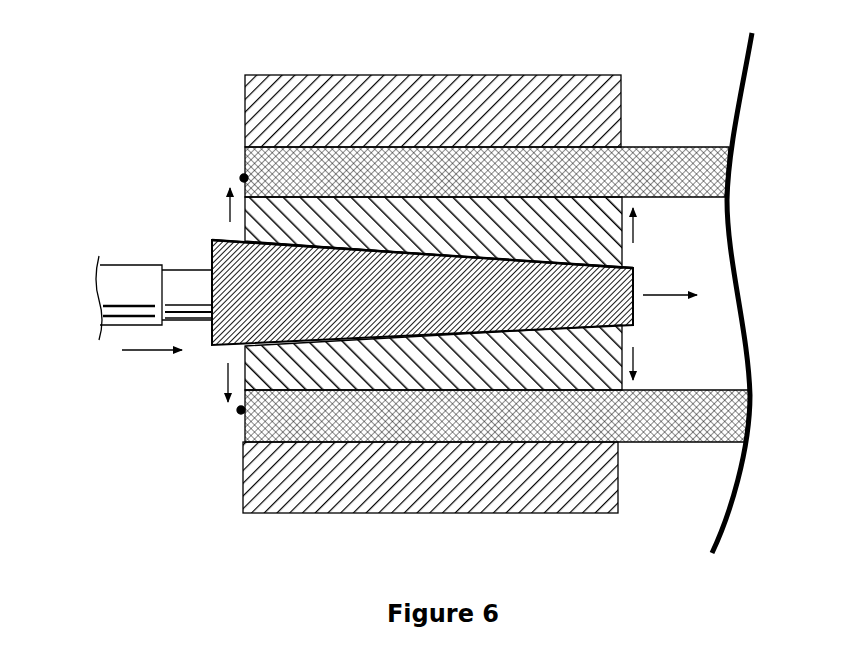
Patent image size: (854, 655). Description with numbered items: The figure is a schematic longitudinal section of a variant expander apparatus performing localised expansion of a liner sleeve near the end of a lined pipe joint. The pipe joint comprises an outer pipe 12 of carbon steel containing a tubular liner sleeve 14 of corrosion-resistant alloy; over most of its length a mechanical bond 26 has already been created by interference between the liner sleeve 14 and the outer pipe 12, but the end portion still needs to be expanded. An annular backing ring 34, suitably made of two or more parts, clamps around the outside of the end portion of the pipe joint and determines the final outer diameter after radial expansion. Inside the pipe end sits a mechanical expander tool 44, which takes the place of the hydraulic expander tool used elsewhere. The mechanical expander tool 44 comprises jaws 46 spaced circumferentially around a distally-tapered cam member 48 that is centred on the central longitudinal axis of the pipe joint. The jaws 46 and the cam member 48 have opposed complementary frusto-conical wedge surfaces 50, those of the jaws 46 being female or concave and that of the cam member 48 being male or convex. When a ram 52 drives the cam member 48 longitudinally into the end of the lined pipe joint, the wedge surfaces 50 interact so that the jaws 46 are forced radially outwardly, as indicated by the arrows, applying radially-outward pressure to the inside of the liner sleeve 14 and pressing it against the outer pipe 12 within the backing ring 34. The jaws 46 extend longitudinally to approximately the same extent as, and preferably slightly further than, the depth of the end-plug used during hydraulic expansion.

The outer pipe 12 is at (680, 165).
The liner sleeve 14 is at (725, 200).
The mechanical bond 26 is at (632, 175).
The backing ring 34 is at (396, 108).
The mechanical expander tool 44 is at (204, 191).
The jaws 46 is at (622, 253).
The cam member 48 is at (212, 250).
The wedge surfaces 50 is at (422, 146).
The ram 52 is at (115, 285).